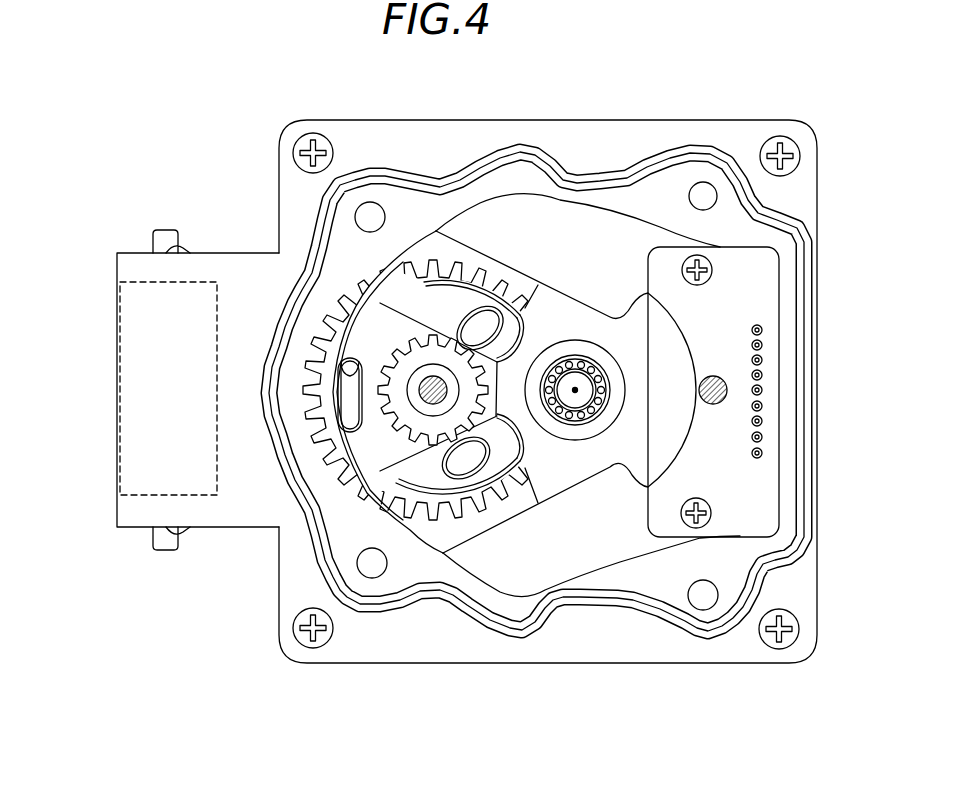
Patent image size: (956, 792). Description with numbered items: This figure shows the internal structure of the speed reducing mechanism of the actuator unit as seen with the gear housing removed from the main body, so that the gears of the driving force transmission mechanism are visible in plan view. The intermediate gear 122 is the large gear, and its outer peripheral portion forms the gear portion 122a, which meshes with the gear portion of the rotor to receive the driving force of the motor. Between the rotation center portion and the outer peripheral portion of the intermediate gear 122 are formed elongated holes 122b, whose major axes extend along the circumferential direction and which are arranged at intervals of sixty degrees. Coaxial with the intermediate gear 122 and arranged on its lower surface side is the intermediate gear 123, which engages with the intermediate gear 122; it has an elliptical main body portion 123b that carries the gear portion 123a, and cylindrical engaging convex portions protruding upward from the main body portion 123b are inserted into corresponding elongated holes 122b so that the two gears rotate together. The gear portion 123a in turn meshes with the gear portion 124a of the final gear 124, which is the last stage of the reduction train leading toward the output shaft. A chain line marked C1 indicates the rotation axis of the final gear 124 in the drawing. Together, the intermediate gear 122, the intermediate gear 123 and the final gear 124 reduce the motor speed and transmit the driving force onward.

The intermediate gear 122 is at (363, 283).
The gear portion 122a is at (423, 267).
The elongated holes 122b is at (523, 303).
The intermediate gear 123 is at (491, 322).
The gear portion 123a is at (445, 355).
The main body portion 123b is at (342, 397).
The final gear 124 is at (548, 293).
The gear portion 124a is at (439, 358).
The rotation axis of bearing C1 is at (575, 390).